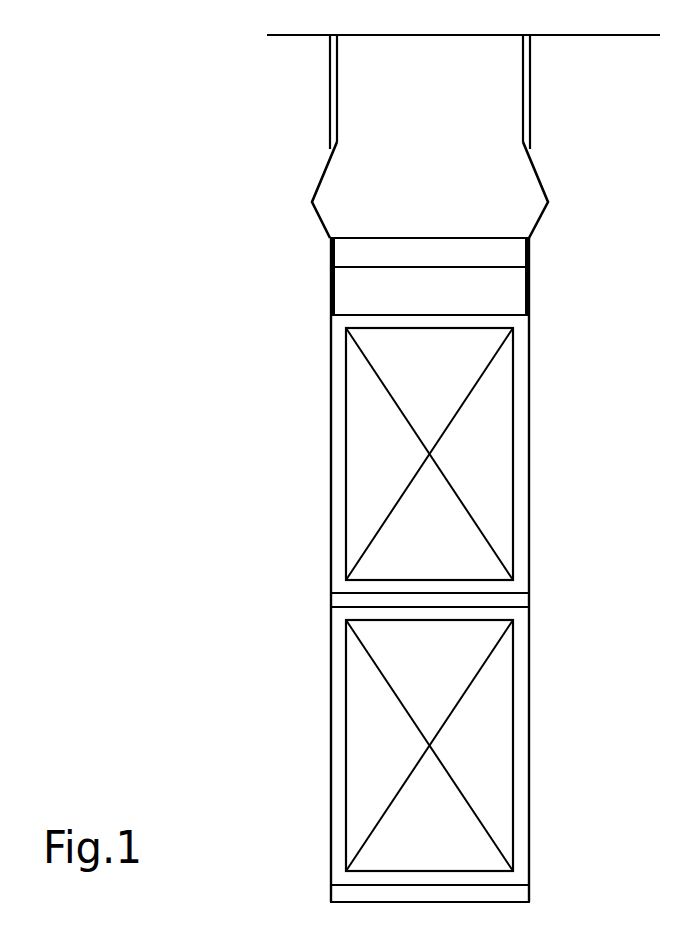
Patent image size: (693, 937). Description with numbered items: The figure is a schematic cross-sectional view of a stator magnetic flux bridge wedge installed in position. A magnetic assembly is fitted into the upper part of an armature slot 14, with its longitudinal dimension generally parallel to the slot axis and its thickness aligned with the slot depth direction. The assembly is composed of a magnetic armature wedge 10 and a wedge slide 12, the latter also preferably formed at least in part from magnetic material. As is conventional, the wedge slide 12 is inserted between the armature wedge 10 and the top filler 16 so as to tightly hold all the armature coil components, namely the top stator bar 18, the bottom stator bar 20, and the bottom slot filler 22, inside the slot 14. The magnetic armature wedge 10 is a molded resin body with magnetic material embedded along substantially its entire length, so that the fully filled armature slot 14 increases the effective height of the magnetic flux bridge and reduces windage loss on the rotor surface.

The magnetic armature wedge 10 is at (375, 127).
The wedge slide 12 is at (342, 252).
The armature slot 14 is at (338, 350).
The top filler 16 is at (345, 297).
The top stator bar 18 is at (352, 423).
The bottom stator bar 20 is at (360, 737).
The bottom slot filler 22 is at (335, 897).